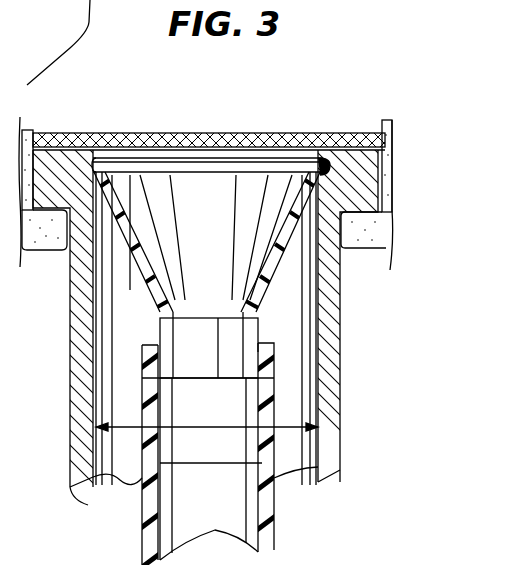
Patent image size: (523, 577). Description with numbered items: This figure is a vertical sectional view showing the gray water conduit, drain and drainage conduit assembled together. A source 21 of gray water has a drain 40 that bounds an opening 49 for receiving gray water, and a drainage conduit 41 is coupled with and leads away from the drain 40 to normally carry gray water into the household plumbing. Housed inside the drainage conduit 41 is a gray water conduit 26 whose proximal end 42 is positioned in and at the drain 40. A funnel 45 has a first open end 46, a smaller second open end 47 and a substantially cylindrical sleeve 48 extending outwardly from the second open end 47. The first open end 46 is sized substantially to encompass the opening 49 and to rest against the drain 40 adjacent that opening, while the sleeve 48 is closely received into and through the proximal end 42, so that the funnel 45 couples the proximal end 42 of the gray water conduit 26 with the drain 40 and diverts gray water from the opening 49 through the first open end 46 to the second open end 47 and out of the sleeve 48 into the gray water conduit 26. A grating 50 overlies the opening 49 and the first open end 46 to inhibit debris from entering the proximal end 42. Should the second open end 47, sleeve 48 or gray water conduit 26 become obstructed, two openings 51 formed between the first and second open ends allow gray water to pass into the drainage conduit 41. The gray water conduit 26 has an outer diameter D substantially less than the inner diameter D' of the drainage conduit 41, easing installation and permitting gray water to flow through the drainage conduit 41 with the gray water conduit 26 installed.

The source of gray water 21 is at (364, 252).
The gray water conduit 26 is at (266, 530).
The drain 40 is at (355, 192).
The drainage conduit 41 is at (328, 390).
The proximal end 42 is at (276, 328).
The funnel 45 is at (135, 268).
The first open end 46 is at (318, 164).
The second open end 47 is at (193, 345).
The sleeve 48 is at (184, 362).
The opening 49 is at (212, 153).
The grating 50 is at (118, 133).
The openings 51 is at (138, 242).
The outer diameter D is at (211, 488).
The inner diameter D' is at (202, 488).